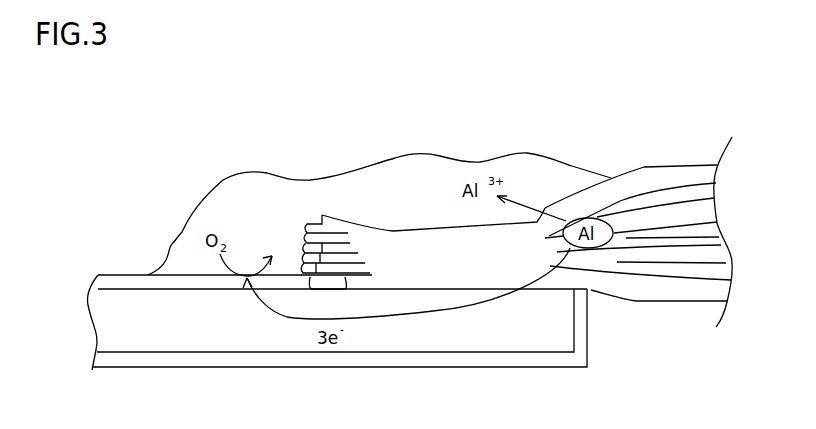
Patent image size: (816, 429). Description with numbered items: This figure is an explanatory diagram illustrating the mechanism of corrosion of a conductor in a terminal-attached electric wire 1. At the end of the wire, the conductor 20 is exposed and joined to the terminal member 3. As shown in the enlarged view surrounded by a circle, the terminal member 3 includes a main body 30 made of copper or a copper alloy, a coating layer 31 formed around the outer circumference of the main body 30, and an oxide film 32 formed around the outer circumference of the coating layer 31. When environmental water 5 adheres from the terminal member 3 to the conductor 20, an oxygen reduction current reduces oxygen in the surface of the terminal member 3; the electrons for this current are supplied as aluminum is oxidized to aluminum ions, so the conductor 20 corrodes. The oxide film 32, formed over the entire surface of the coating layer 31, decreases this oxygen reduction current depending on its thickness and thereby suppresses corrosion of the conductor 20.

The terminal-attached electric wire 1 is at (642, 330).
The terminal member 3 is at (167, 166).
The environmental water 5 is at (275, 181).
The conductor 20 is at (624, 190).
The main body 30 is at (158, 313).
The coating layer 31 is at (188, 287).
The oxide film 32 is at (132, 272).